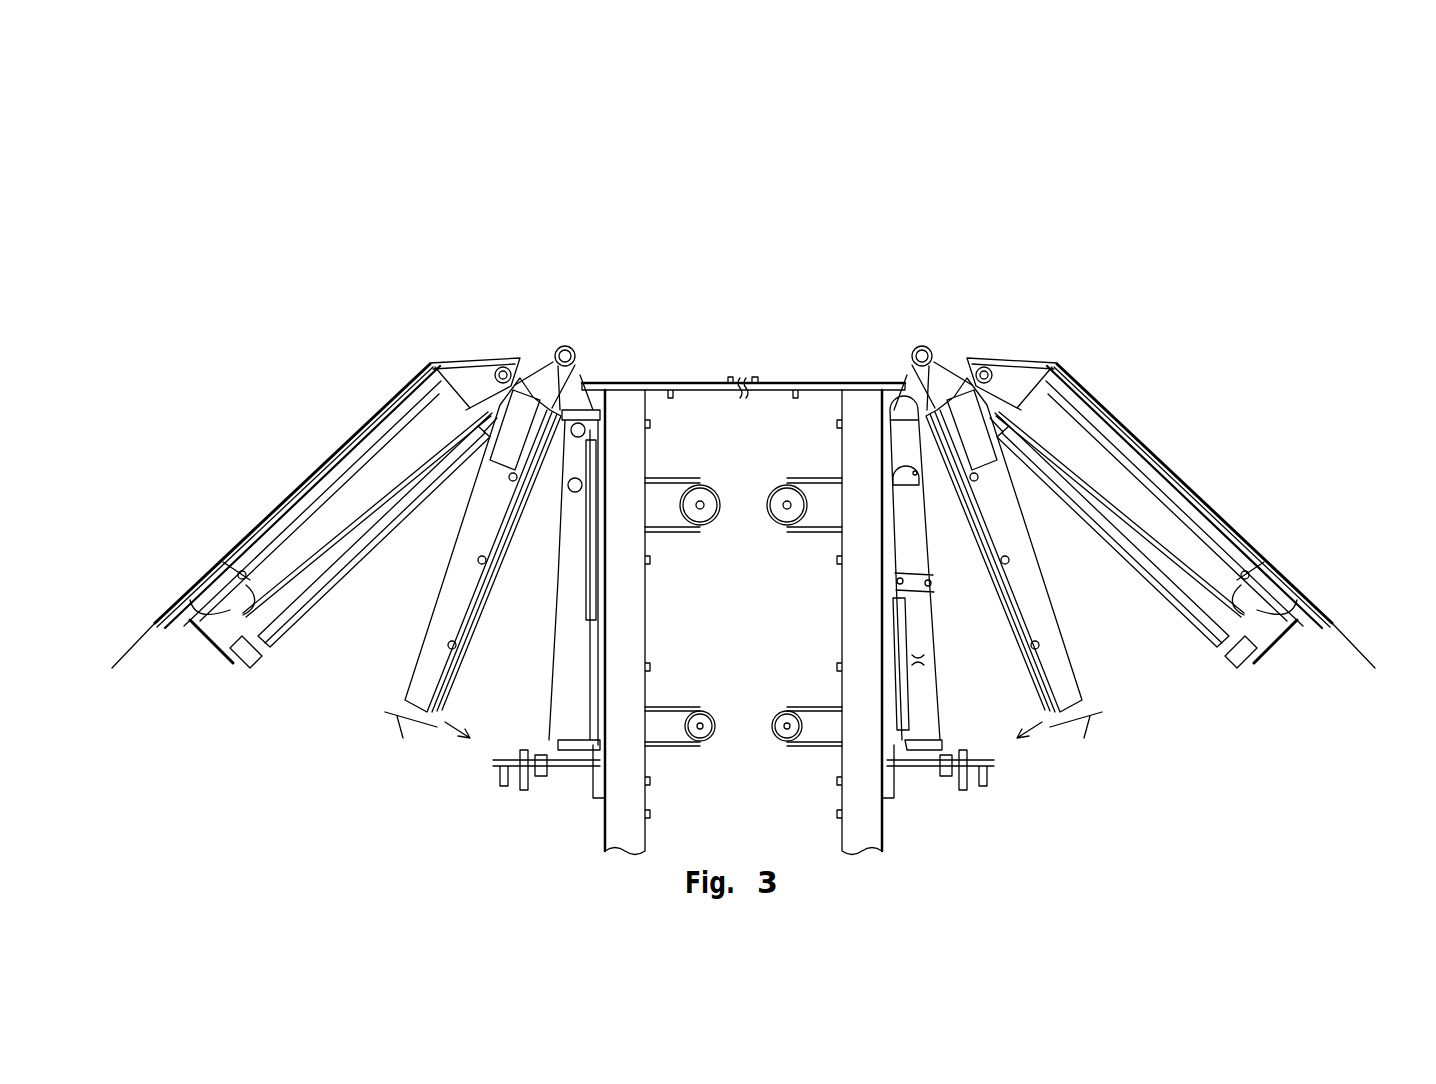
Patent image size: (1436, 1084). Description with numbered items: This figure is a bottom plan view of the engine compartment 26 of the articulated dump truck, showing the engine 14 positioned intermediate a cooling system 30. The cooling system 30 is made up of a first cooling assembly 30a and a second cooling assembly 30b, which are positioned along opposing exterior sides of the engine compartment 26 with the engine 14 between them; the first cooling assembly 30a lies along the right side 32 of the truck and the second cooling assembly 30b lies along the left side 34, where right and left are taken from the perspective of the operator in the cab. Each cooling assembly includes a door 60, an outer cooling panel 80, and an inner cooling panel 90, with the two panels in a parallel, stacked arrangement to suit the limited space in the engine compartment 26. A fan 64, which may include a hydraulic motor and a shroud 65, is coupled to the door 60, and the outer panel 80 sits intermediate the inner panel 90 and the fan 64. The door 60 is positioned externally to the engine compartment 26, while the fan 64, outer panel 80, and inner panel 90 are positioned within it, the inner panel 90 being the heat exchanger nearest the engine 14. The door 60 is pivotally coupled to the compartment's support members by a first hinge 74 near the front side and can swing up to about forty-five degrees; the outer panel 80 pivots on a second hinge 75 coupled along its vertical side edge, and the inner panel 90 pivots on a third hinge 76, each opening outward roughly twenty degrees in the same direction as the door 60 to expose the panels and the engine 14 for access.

The cooling system 30 is at (726, 190).
The engine compartment 26 is at (828, 258).
The engine 14 is at (698, 412).
The first cooling assembly 30a is at (340, 400).
The second cooling assembly 30b is at (1169, 395).
The right side 32 is at (219, 446).
The left side 34 is at (1289, 446).
The door 60 is at (130, 652).
The fan 64 is at (328, 560).
The shroud 65 is at (350, 518).
The first hinge 74 is at (490, 368).
The second hinge 75 is at (540, 370).
The third hinge 76 is at (571, 352).
The outer cooling panel 80 is at (413, 667).
The inner cooling panel 90 is at (557, 690).